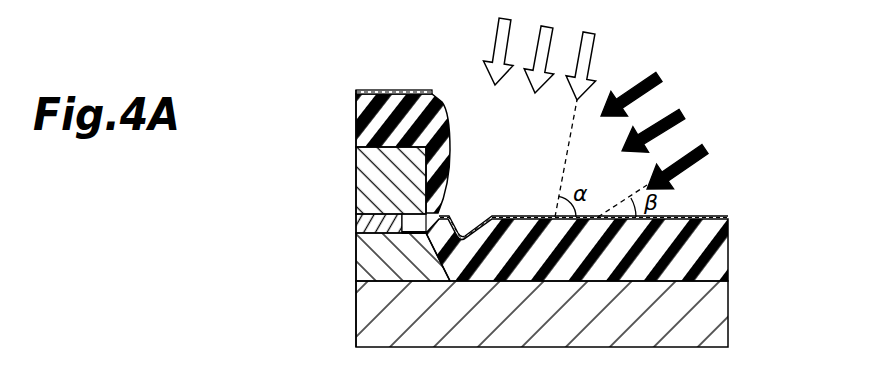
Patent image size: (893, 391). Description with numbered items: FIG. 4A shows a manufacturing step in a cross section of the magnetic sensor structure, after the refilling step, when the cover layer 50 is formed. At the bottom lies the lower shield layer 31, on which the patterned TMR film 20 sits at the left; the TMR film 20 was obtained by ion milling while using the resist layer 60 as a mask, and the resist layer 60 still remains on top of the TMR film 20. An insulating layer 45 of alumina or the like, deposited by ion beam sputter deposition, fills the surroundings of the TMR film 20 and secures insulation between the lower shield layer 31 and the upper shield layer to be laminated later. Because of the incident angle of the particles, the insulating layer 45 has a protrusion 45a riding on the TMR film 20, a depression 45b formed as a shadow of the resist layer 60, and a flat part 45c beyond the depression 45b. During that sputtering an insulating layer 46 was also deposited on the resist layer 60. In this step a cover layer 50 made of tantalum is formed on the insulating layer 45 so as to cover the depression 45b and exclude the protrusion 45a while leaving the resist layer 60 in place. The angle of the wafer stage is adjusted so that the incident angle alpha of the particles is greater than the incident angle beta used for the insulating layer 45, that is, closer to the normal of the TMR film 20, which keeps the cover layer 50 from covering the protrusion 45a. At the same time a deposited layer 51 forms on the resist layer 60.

The TMR film 20 is at (365, 257).
The lower shield layer 31 is at (721, 311).
The insulating layer 45 is at (721, 244).
The protrusion 45a is at (433, 217).
The depression 45b is at (470, 222).
The flat part 45c is at (685, 216).
The insulating layer 46 is at (367, 117).
The cover layer 50 is at (722, 216).
The deposited layer 51 is at (366, 89).
The resist layer 60 is at (364, 181).